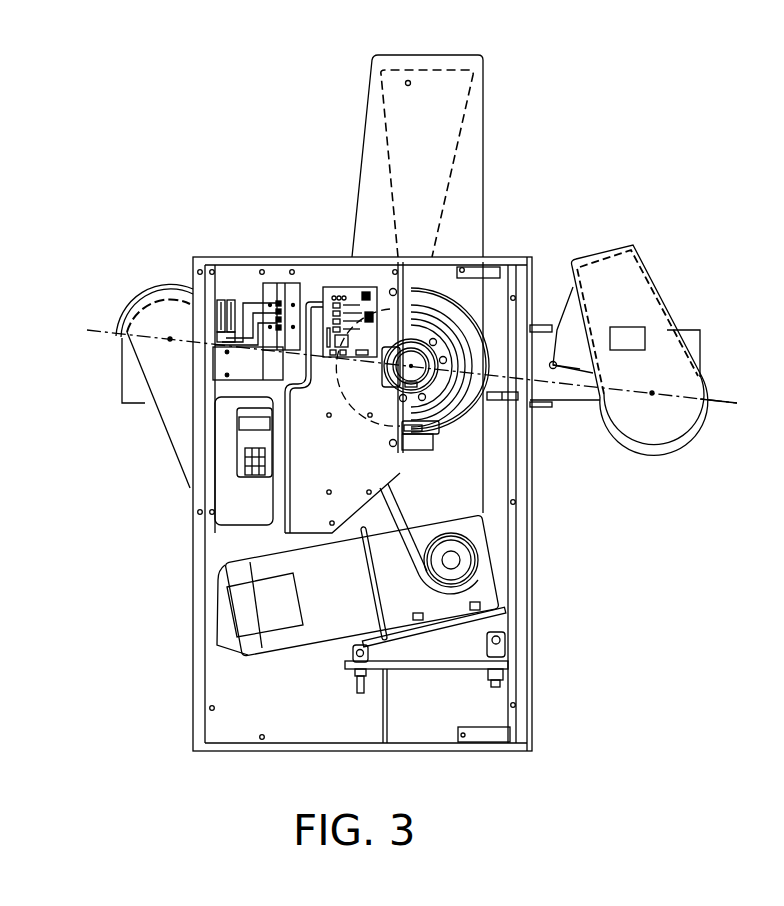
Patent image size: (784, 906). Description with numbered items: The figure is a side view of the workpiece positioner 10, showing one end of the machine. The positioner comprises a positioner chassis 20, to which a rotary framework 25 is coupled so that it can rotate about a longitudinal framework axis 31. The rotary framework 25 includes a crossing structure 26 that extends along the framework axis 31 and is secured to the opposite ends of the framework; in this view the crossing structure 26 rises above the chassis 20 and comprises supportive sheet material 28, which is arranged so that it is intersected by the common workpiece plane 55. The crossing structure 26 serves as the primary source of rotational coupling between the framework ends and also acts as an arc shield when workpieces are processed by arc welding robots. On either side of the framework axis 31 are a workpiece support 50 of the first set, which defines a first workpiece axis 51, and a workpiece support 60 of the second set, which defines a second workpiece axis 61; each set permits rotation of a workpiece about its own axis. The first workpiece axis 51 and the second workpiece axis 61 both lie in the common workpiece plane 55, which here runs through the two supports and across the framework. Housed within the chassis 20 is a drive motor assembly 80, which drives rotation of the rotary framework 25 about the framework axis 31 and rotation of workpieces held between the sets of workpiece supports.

The workpiece positioner 10 is at (200, 157).
The positioner chassis 20 is at (532, 751).
The rotary framework 25 is at (483, 55).
The crossing structure 26 is at (478, 175).
The supportive sheet material 28 is at (478, 92).
The longitudinal framework axis 31 is at (386, 370).
The first workpiece support 50 is at (705, 378).
The first workpiece axis 51 is at (652, 393).
The common workpiece plane 55 is at (720, 403).
The second workpiece support 60 is at (135, 298).
The second workpiece axis 61 is at (170, 342).
The drive motor assembly 80 is at (338, 471).